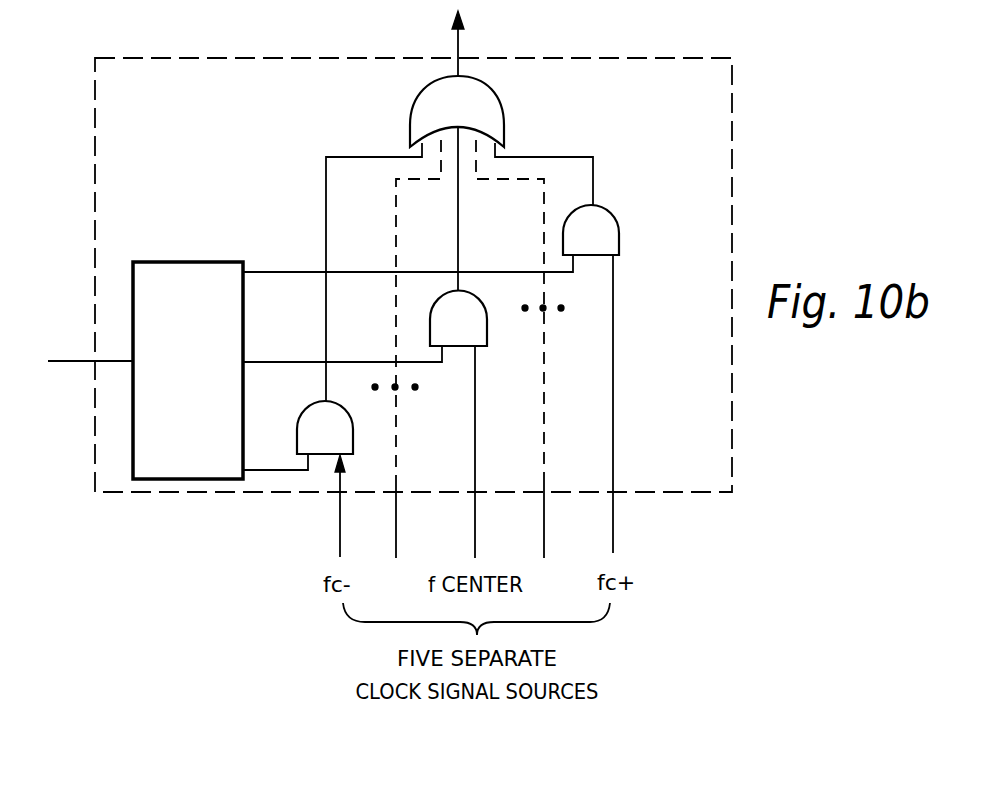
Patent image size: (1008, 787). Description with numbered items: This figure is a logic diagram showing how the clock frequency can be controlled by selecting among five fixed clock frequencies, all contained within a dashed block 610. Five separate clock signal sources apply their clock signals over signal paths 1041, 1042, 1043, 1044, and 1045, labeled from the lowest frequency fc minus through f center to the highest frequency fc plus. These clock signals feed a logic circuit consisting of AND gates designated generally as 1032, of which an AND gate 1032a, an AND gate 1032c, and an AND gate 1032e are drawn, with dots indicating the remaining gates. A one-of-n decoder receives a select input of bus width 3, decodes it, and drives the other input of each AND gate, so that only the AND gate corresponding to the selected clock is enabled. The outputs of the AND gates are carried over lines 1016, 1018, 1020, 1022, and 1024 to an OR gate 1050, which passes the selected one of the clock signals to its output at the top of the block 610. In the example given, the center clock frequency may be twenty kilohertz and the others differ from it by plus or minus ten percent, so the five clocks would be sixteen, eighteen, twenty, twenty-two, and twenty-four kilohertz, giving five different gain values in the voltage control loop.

The clock selection circuit 610 is at (146, 113).
The OR gate 1050 is at (504, 118).
The AND gate output line 1016 is at (326, 208).
The AND gate output line 1018 is at (396, 249).
The AND gate output line 1020 is at (458, 207).
The AND gate output line 1022 is at (544, 249).
The AND gate output line 1024 is at (593, 186).
The AND gates 1032 is at (456, 445).
The AND gate 1032a is at (300, 418).
The AND gate 1032c is at (487, 347).
The AND gate 1032e is at (620, 240).
The three-bit select input 3 is at (63, 372).
The signal path 1041 is at (340, 526).
The signal path 1042 is at (396, 526).
The signal path 1043 is at (484, 522).
The signal path 1044 is at (556, 522).
The signal path 1045 is at (613, 526).